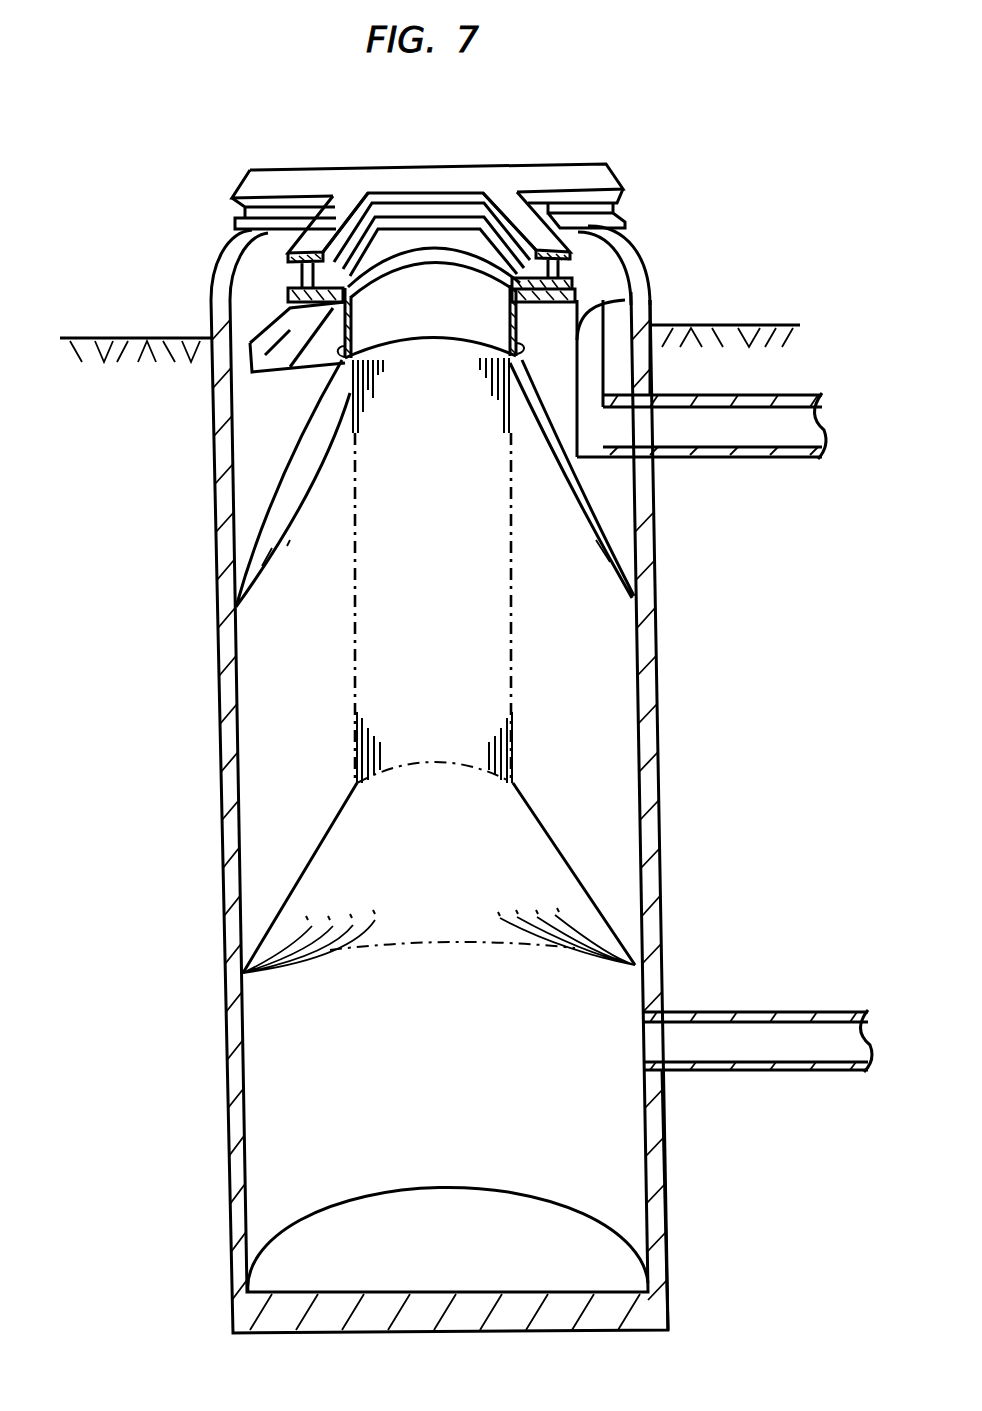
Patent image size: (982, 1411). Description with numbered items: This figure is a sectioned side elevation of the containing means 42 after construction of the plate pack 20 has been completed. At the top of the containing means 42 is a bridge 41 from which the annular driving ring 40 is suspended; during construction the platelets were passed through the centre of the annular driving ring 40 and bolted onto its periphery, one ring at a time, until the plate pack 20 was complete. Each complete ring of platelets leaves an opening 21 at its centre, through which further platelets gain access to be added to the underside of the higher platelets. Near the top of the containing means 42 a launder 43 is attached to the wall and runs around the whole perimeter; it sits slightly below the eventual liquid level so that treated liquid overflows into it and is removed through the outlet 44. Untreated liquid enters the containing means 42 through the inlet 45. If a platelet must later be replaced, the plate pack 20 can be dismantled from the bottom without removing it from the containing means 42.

The plate pack 20 is at (310, 877).
The opening 21 is at (442, 735).
The annular driving ring 40 is at (450, 283).
The bridge 41 is at (357, 193).
The containing means 42 is at (443, 1133).
The launder 43 is at (593, 345).
The outlet 44 is at (763, 422).
The inlet 45 is at (770, 1037).